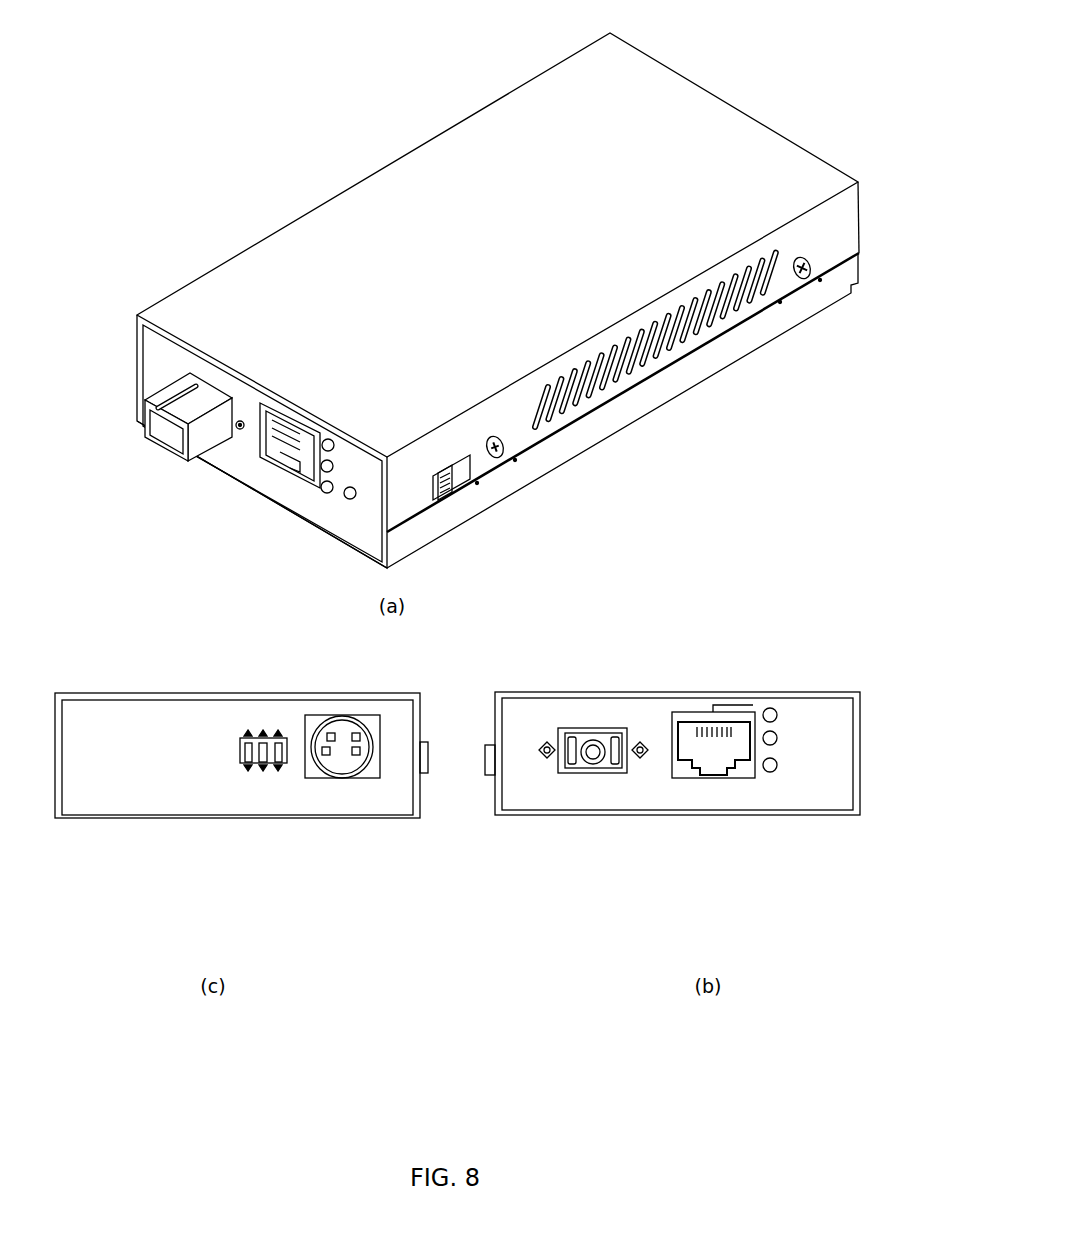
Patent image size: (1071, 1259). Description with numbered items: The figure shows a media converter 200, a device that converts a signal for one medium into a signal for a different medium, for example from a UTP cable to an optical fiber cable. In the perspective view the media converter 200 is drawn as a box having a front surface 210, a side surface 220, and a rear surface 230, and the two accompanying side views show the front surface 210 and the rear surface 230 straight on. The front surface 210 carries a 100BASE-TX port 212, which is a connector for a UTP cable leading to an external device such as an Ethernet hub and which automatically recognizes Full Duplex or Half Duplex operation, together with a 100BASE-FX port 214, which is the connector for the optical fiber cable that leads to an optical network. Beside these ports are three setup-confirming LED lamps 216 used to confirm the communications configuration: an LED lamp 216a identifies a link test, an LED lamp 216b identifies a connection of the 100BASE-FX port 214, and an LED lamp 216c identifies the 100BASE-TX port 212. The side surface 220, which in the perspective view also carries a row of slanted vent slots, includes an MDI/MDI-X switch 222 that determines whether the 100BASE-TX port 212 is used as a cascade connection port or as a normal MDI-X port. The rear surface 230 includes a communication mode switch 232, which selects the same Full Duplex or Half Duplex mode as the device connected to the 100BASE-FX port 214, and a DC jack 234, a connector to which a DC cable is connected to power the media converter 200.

The media converter 200 is at (418, 34).
The front surface 210 is at (227, 382).
The 100BASE-TX port 212 is at (298, 428).
The 100BASE-FX port 214 is at (147, 433).
The setup-confirming LED lamps 216 is at (775, 783).
The LED lamp 216a is at (782, 738).
The LED lamp 216b is at (782, 765).
The LED lamp 216c is at (782, 708).
The side surface 220 is at (613, 377).
The MDI/MDI-X switch 222 is at (468, 485).
The rear surface 230 is at (722, 93).
The communication mode switch 232 is at (240, 763).
The DC jack 234 is at (337, 763).